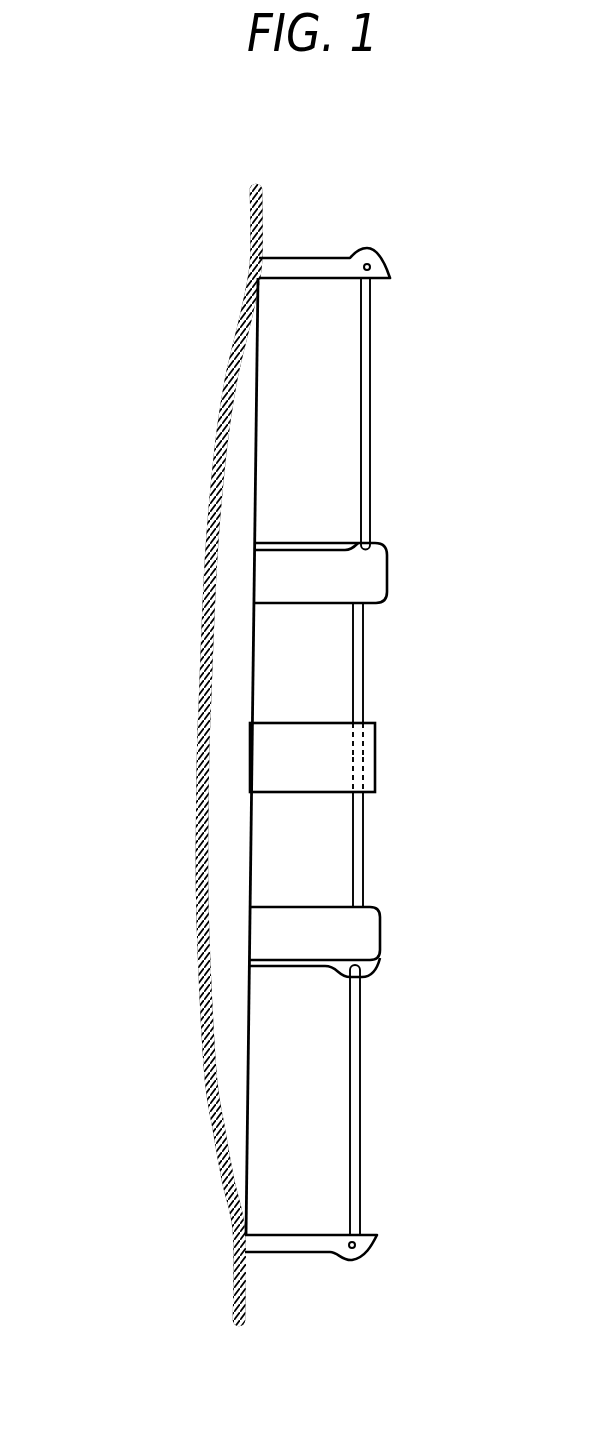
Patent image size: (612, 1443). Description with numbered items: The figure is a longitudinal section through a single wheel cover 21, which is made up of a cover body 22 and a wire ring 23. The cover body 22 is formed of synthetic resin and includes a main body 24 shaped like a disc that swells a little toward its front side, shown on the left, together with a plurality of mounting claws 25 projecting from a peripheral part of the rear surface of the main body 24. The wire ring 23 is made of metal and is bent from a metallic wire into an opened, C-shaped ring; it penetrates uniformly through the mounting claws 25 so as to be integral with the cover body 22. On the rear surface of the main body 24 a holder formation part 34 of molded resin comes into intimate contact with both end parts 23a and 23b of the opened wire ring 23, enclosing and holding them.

The wheel cover 21 is at (150, 350).
The cover body 22 is at (249, 281).
The wire ring 23 is at (355, 756).
The end part of the wire ring 23a is at (352, 757).
The end part of the wire ring 23b is at (352, 760).
The main body 24 is at (198, 757).
The mounting claws 25 is at (384, 261).
The holder formation part 34 is at (376, 758).